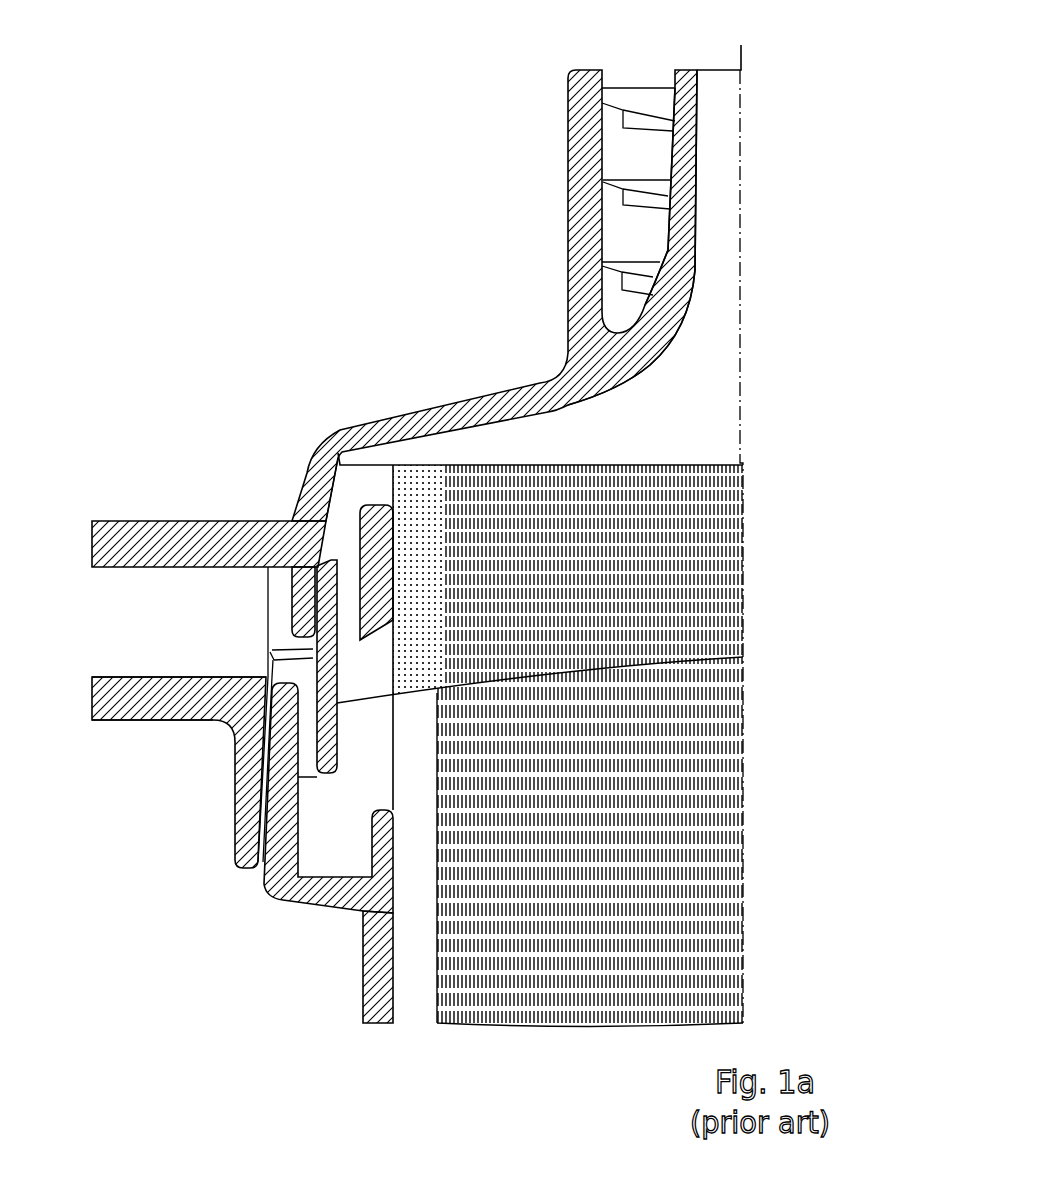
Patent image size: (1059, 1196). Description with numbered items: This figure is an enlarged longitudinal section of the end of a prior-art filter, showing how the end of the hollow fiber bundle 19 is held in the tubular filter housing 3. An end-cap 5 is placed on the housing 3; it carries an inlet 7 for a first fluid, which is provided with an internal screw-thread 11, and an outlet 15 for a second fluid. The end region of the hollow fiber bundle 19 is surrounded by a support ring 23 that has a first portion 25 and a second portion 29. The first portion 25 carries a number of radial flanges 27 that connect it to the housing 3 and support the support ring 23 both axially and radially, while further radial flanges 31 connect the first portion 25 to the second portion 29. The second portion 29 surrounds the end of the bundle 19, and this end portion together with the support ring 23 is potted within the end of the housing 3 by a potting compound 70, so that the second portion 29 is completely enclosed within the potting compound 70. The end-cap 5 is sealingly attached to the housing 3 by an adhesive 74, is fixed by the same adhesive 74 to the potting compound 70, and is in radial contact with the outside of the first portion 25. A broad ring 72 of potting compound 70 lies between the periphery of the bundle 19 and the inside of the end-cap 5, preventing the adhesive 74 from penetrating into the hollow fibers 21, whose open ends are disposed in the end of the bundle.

The tubular filter housing 3 is at (380, 985).
The end-cap 5 is at (497, 397).
The inlet 7 is at (583, 250).
The internal screw-thread 11 is at (618, 155).
The outlet 15 is at (140, 537).
The hollow fiber bundle 19 is at (752, 840).
The hollow fibers 21 is at (690, 720).
The support ring 23 is at (270, 652).
The first portion 25 is at (308, 745).
The radial flanges 27 is at (305, 730).
The second portion 29 is at (370, 520).
The further radial flanges 31 is at (322, 558).
The potting compound 70 is at (355, 490).
The ring of potting compound 72 is at (372, 477).
The adhesive 74 is at (336, 457).